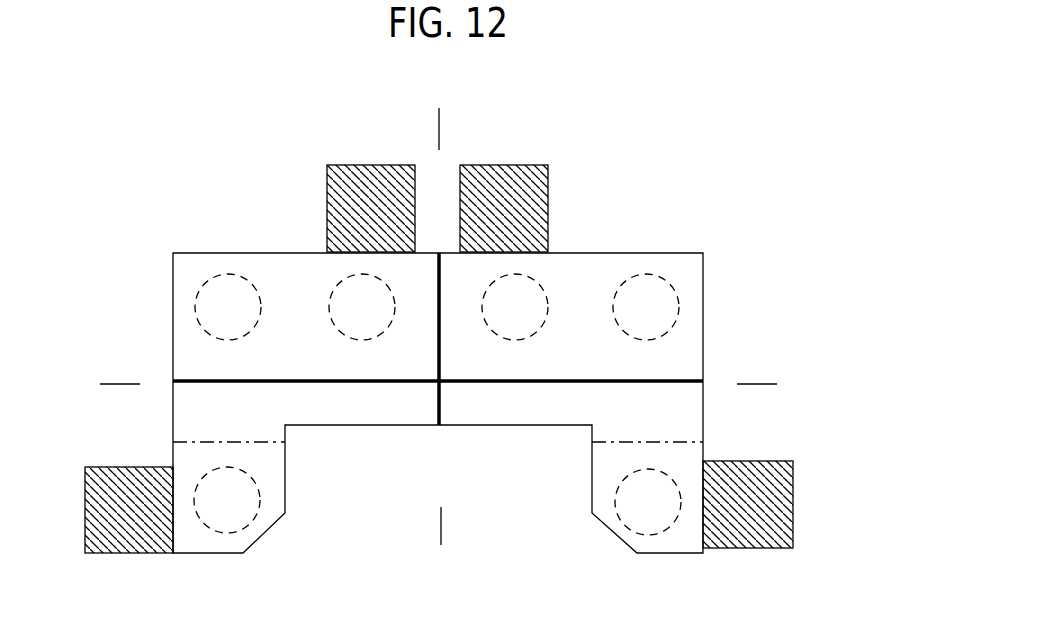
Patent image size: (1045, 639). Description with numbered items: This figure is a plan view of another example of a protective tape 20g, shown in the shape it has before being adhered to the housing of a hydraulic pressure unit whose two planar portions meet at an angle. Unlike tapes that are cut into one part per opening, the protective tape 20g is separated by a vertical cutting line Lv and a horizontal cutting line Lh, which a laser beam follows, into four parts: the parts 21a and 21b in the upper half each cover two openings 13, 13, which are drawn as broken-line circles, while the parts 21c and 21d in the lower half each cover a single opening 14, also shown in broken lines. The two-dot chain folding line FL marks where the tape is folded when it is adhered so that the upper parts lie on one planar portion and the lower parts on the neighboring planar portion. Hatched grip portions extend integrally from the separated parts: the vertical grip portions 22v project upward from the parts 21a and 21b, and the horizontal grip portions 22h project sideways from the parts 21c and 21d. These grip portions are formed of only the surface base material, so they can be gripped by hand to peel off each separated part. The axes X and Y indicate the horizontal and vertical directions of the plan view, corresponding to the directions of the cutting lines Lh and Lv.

The opening 13 is at (196, 293).
The opening 14 is at (236, 540).
The protective tape 20g is at (432, 391).
The part 21a is at (275, 275).
The part 21b is at (670, 266).
The part 21c is at (327, 414).
The part 21d is at (513, 412).
The vertical grip portion 22v is at (338, 178).
The horizontal grip portion 22h is at (132, 548).
The cutting line Lh is at (203, 379).
The cutting line Lv is at (437, 400).
The folding line FL is at (215, 442).
The X axis X is at (439, 383).
The Y axis Y is at (438, 327).